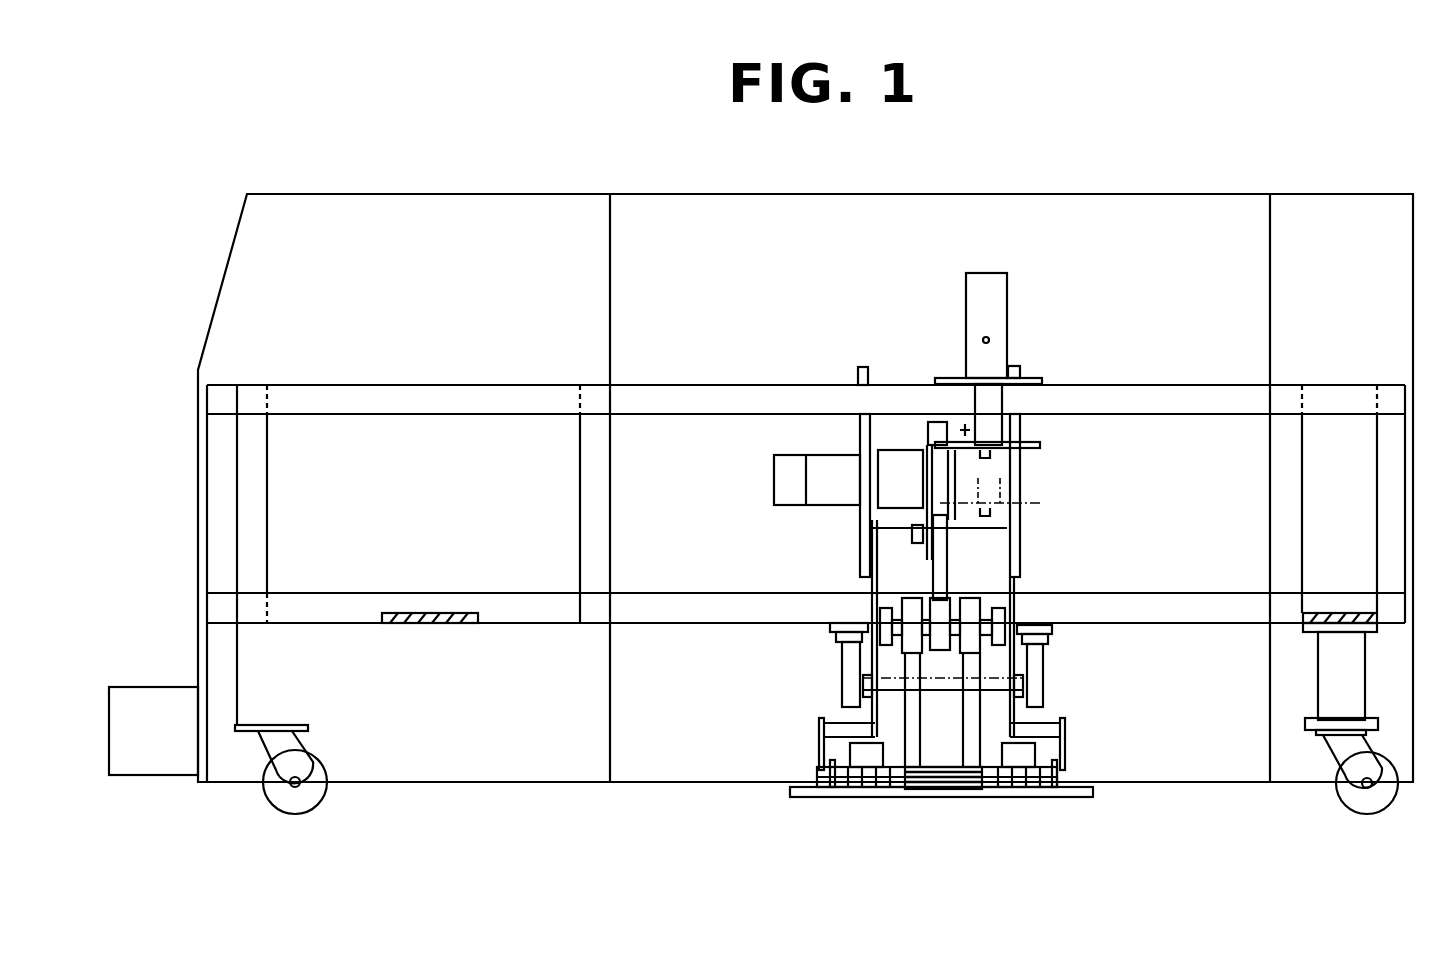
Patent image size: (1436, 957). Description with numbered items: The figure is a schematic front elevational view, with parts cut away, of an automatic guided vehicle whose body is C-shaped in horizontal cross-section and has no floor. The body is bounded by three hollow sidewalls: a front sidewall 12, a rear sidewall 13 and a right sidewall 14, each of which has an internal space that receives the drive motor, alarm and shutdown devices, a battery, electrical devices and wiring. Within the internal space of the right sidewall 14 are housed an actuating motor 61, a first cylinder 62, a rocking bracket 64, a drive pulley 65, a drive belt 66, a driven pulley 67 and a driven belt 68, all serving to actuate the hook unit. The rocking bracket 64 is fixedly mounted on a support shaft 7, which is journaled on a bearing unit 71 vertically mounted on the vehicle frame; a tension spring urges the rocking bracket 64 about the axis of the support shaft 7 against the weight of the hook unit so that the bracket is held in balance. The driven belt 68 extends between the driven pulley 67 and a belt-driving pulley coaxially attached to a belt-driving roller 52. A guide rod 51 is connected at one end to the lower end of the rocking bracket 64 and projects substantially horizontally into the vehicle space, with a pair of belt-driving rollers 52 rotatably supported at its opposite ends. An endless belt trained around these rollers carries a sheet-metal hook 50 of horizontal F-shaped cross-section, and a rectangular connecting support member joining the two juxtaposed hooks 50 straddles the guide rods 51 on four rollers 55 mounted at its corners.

The right sidewall 14 is at (1143, 215).
The front sidewall 12 is at (415, 361).
The rear sidewall 13 is at (1351, 360).
The first cylinder 62 is at (987, 308).
The actuating motor 61 is at (845, 500).
The rocking bracket 64 is at (870, 585).
The drive pulley 65 is at (950, 485).
The drive belt 66 is at (935, 568).
The driven pulley 67 is at (968, 628).
The support shaft 7 is at (943, 680).
The driven belt 68 is at (970, 712).
The bearing unit 71 is at (838, 678).
The hook 50 is at (852, 750).
The guide rod 51 is at (808, 776).
The rollers 55 is at (840, 786).
The belt-driving roller 52 is at (905, 792).